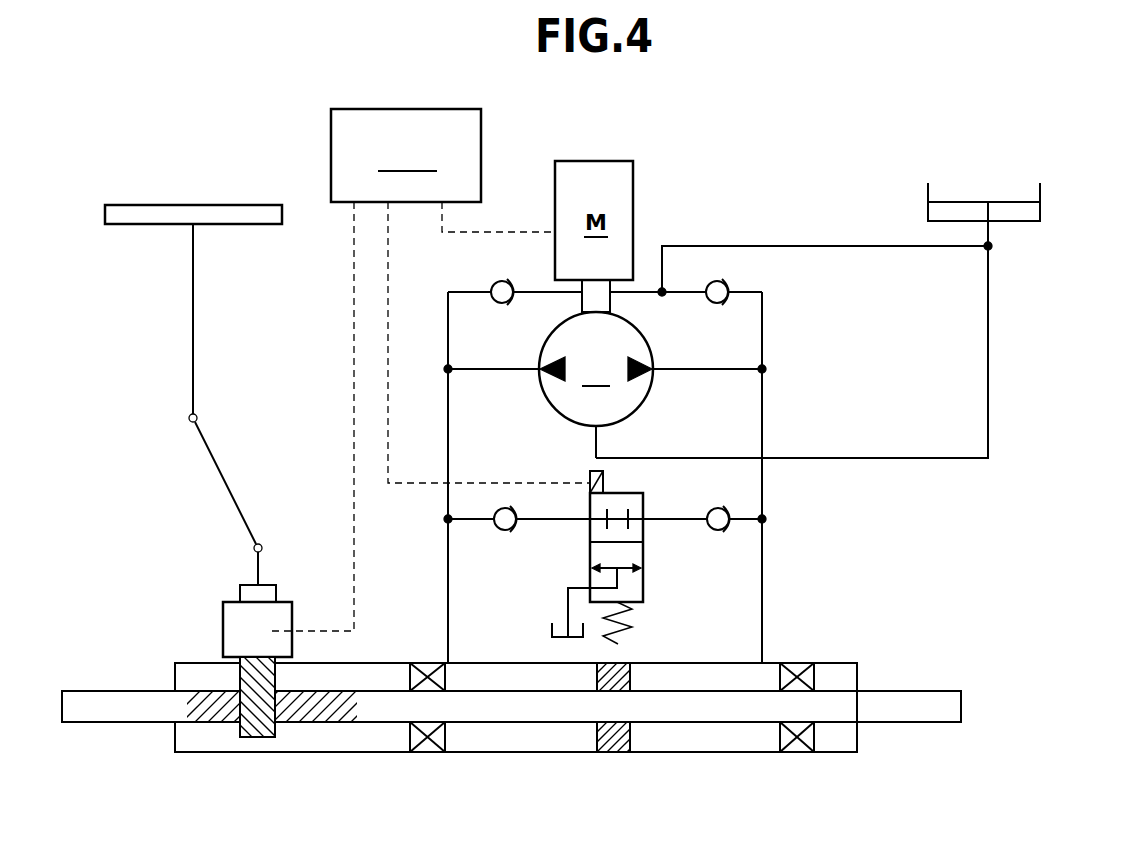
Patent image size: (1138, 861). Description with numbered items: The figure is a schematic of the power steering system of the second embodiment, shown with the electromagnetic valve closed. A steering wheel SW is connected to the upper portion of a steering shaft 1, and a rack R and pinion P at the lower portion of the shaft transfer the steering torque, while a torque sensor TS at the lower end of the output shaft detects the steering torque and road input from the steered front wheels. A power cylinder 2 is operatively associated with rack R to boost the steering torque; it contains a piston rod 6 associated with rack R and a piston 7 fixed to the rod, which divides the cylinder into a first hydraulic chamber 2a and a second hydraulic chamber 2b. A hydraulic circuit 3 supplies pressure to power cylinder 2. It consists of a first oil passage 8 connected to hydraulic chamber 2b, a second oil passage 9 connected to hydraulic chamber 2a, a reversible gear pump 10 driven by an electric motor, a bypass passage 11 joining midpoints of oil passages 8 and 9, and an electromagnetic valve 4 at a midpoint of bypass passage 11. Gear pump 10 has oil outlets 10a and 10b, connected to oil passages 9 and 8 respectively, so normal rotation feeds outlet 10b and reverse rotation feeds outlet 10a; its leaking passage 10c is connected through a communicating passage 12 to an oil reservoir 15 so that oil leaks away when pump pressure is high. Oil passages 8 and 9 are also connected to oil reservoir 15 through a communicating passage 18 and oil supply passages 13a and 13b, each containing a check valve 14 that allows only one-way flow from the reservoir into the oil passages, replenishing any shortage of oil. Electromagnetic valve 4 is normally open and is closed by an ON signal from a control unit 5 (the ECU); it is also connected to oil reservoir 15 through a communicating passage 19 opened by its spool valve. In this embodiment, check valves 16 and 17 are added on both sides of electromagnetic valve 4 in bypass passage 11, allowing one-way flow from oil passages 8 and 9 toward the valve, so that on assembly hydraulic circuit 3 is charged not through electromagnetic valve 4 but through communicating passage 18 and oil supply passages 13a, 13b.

The steering wheel SW is at (164, 203).
The steering shaft 1 is at (193, 332).
The control unit 5 is at (481, 129).
The hydraulic circuit 3 is at (787, 531).
The oil supply passage 13a is at (762, 333).
The oil supply passage 13b is at (448, 352).
The check valve 14 is at (497, 284).
The communicating passage 18 is at (762, 246).
The oil reservoir 15 is at (1040, 206).
The communicating passage 12 is at (873, 458).
The gear pump 10 is at (596, 369).
The oil outlet 10a is at (540, 375).
The oil outlet 10b is at (655, 372).
The leaking passage 10c is at (590, 427).
The second oil passage 9 is at (448, 615).
The check valve 17 is at (498, 530).
The bypass passage 11 is at (533, 523).
The check valve 16 is at (722, 530).
The first oil passage 8 is at (762, 620).
The electromagnetic valve 4 is at (655, 554).
The communicating passage 19 is at (566, 605).
The torque sensor TS is at (223, 618).
The power cylinder 2 is at (601, 762).
The first hydraulic chamber 2a is at (521, 738).
The second hydraulic chamber 2b is at (704, 742).
The piston rod 6 is at (467, 712).
The rack R is at (200, 715).
The pinion P is at (255, 732).
The piston 7 is at (618, 745).